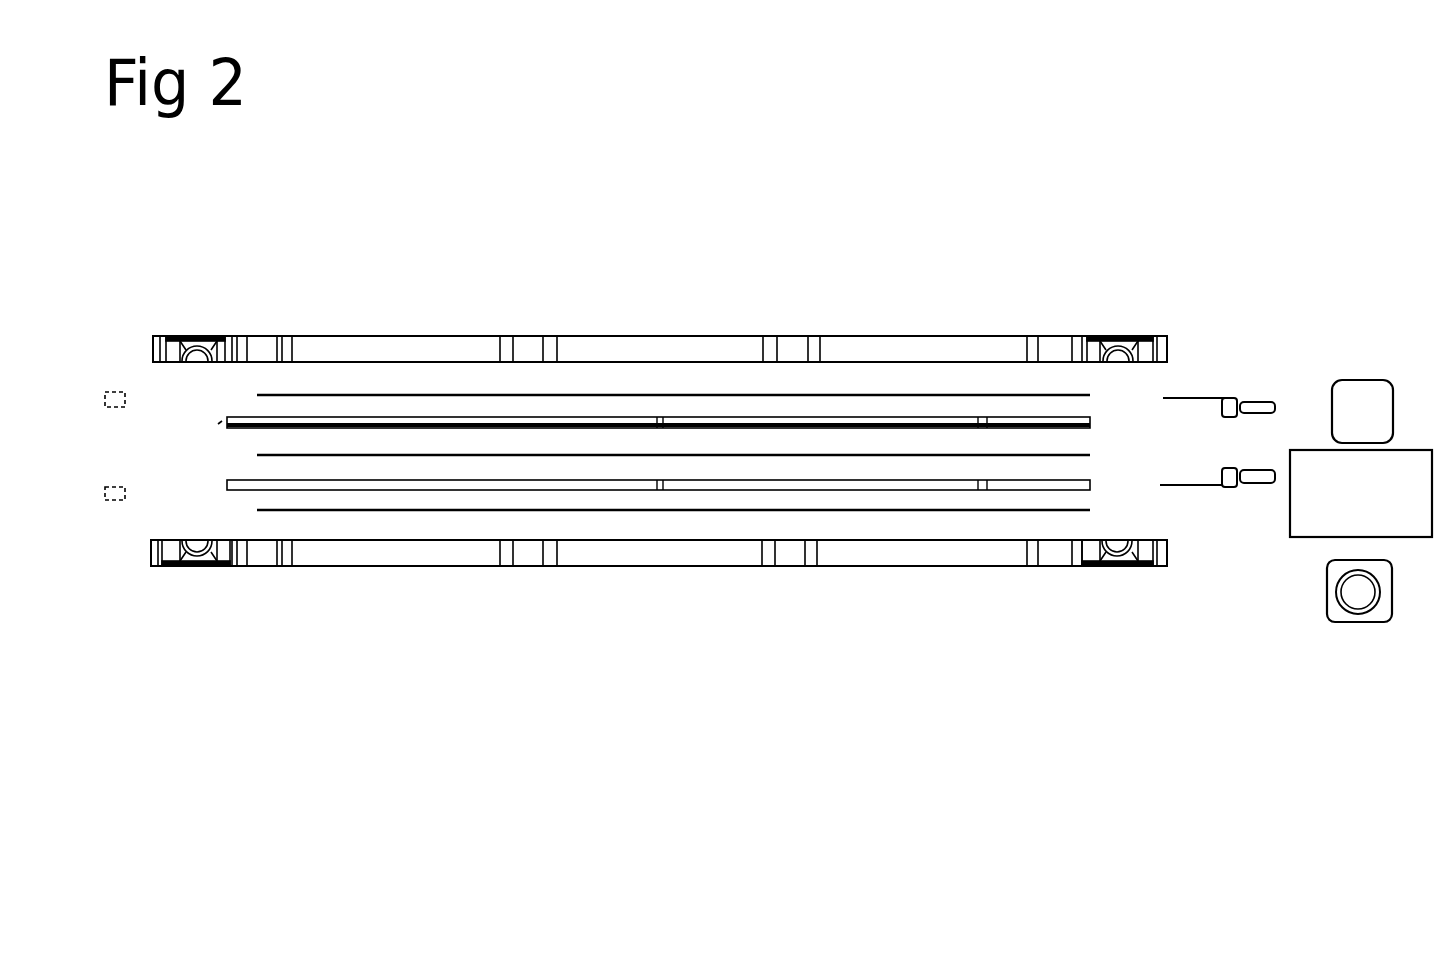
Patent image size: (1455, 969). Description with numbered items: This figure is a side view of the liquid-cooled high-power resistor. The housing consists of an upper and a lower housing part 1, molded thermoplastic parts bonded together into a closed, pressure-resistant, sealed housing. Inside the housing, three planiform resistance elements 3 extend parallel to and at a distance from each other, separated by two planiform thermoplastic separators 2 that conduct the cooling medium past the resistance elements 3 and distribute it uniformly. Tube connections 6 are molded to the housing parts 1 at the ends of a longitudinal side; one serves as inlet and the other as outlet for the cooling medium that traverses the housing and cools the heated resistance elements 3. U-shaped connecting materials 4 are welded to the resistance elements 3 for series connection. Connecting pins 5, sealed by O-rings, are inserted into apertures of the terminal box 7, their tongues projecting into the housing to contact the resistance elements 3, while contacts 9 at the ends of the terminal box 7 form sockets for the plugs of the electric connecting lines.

The housing part 1 is at (172, 533).
The separator 2 is at (225, 480).
The resistance element 3 is at (1090, 398).
The connecting material 4 is at (118, 410).
The connecting pin 5 is at (1193, 402).
The connection 6 is at (192, 566).
The terminal box 7 is at (1418, 457).
The contact 9 is at (1325, 593).